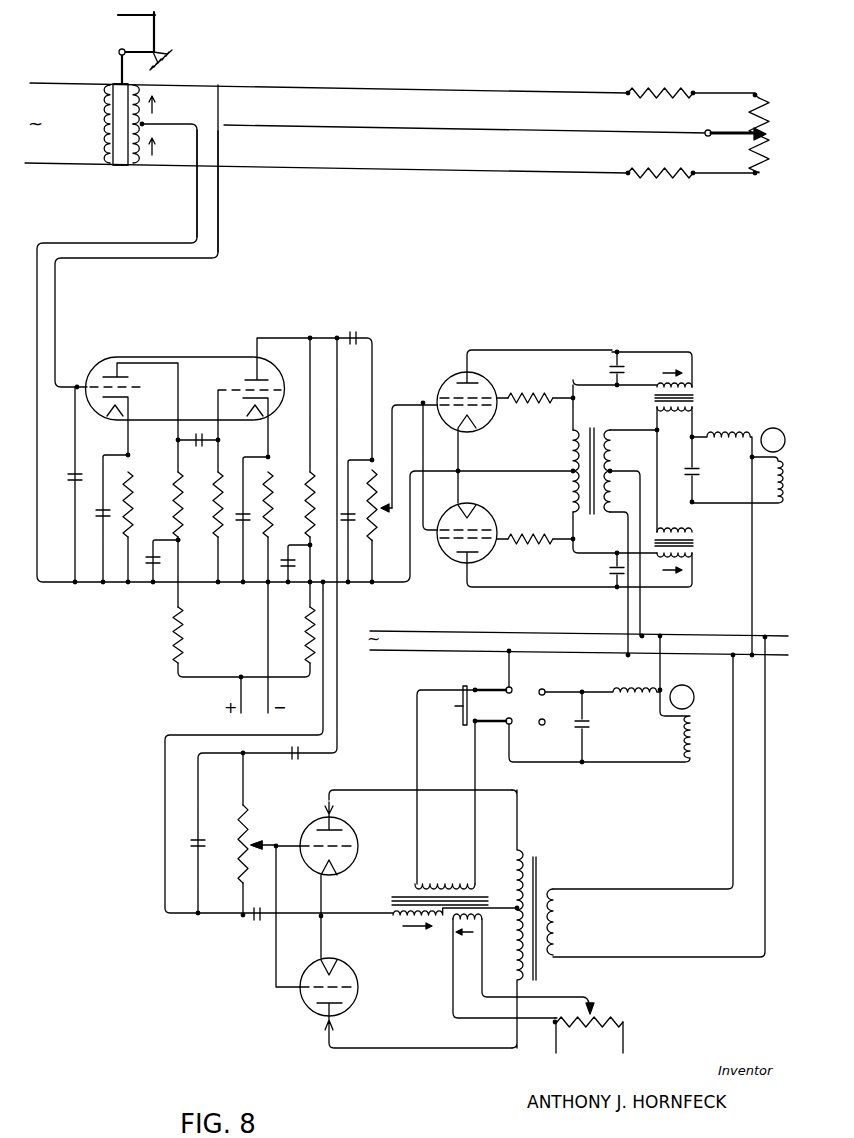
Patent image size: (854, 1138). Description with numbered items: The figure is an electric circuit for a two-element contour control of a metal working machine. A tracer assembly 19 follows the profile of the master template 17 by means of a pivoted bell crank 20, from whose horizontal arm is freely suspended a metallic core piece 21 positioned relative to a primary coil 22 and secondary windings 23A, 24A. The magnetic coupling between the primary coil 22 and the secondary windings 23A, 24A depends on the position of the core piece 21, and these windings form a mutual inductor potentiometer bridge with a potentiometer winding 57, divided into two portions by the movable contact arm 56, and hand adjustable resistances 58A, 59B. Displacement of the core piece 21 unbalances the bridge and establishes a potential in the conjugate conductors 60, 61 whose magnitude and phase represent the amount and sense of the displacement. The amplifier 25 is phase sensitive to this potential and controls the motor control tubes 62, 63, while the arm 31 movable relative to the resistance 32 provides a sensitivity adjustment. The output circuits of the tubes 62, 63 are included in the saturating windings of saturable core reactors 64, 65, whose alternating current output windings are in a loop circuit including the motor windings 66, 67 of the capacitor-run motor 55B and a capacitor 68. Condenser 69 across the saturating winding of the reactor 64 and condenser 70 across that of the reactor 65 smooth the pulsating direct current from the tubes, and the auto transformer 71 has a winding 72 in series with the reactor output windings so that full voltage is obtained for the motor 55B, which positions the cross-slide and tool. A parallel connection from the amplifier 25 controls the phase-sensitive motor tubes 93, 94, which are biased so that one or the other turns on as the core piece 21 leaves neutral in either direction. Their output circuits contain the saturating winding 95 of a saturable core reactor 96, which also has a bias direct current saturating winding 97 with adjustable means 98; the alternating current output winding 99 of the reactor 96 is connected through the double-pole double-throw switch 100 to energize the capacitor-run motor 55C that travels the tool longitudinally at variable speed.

The master template 17 is at (125, 17).
The tracer assembly 19 is at (108, 75).
The pivoted bell crank 20 is at (158, 31).
The metallic core piece 21 is at (120, 166).
The primary coil 22 is at (97, 126).
The secondary winding 23A is at (147, 90).
The secondary winding 24A is at (147, 132).
The amplifier 25 is at (221, 348).
The arm 31 is at (388, 519).
The resistance 32 is at (370, 470).
The capacitor-run alternating current motor 55B is at (771, 430).
The capacitor-run motor 55C is at (606, 699).
The movable contact arm 56 is at (733, 128).
The potentiometer winding 57 is at (775, 160).
The hand adjustable resistance 58A is at (692, 83).
The hand adjustable resistance 59B is at (692, 185).
The conjugate conductor 60 is at (208, 260).
The conjugate conductor 61 is at (183, 242).
The motor control tube 62 is at (456, 566).
The motor control tube 63 is at (450, 375).
The saturable core reactor 64 is at (665, 442).
The saturable core reactor 65 is at (668, 557).
The motor winding 66 is at (726, 432).
The motor winding 67 is at (786, 498).
The capacitor 68 is at (702, 475).
The condenser 69 is at (612, 366).
The condenser 70 is at (609, 571).
The auto transformer 71 is at (566, 459).
The transformer winding 72 is at (612, 470).
The motor tube 93 is at (357, 843).
The motor tube 94 is at (357, 994).
The saturating winding 95 is at (439, 926).
The saturable core reactor 96 is at (387, 903).
The bias direct current saturating winding 97 is at (480, 926).
The adjustable means 98 is at (629, 1006).
The alternating current output winding 99 is at (434, 882).
The double-pole double-throw switch 100 is at (558, 685).